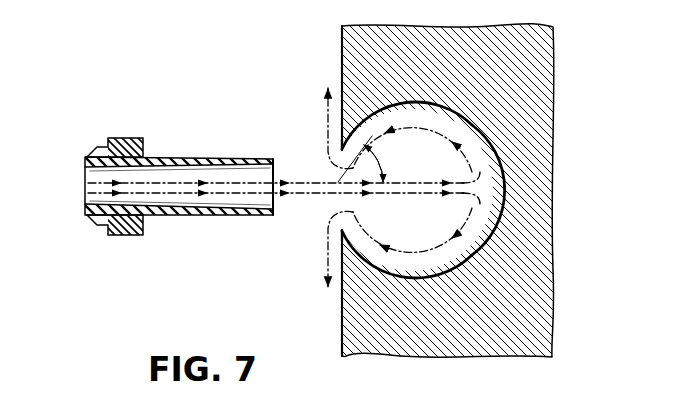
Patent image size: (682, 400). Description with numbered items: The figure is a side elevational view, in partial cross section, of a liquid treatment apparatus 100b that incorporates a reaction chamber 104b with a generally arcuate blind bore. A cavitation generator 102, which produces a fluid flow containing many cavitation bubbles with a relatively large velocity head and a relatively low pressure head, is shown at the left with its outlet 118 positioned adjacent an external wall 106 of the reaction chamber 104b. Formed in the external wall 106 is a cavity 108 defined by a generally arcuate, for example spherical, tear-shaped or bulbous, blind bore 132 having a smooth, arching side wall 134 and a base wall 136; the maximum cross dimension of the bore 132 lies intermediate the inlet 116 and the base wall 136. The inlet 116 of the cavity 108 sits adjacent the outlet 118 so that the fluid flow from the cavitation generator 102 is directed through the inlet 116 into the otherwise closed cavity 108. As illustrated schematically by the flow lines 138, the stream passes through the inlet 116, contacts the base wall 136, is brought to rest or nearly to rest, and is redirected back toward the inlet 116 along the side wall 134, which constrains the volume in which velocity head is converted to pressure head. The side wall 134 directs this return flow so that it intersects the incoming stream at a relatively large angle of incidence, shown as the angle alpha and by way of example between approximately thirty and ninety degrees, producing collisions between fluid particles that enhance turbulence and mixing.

The liquid treatment apparatus 100b is at (251, 146).
The cavitation generator 102 is at (103, 129).
The reaction chamber 104b is at (451, 192).
The external wall 106 is at (342, 42).
The cavity 108 is at (472, 193).
The inlet 116 is at (336, 159).
The outlet 118 is at (274, 162).
The blind bore 132 is at (412, 272).
The side wall 134 is at (422, 110).
The base wall 136 is at (497, 184).
The flow lines 138 is at (316, 196).